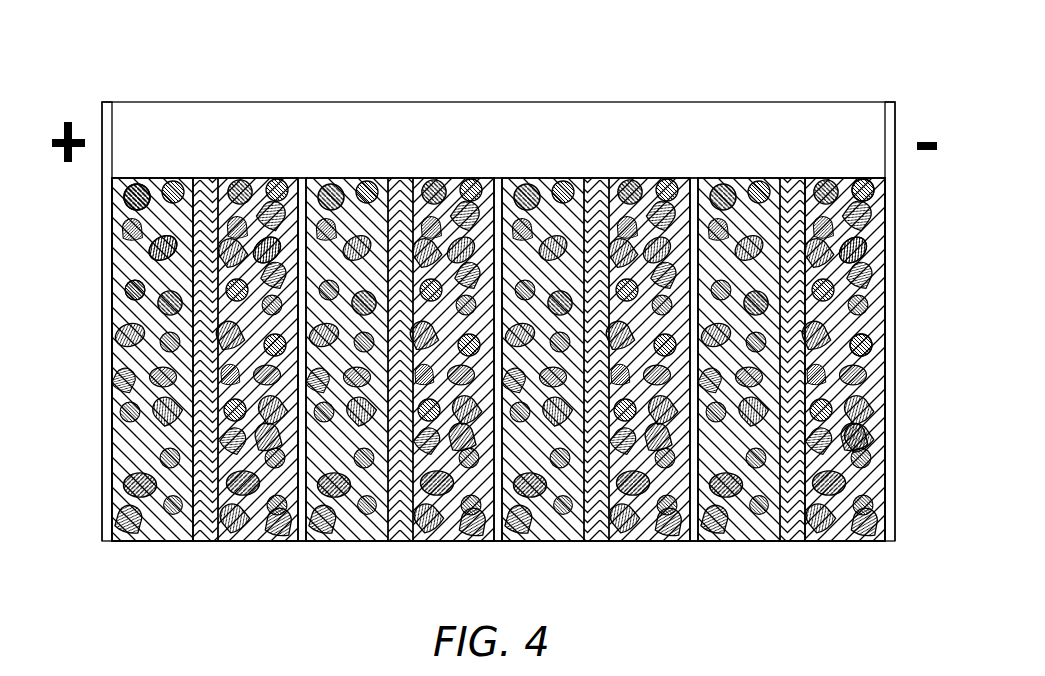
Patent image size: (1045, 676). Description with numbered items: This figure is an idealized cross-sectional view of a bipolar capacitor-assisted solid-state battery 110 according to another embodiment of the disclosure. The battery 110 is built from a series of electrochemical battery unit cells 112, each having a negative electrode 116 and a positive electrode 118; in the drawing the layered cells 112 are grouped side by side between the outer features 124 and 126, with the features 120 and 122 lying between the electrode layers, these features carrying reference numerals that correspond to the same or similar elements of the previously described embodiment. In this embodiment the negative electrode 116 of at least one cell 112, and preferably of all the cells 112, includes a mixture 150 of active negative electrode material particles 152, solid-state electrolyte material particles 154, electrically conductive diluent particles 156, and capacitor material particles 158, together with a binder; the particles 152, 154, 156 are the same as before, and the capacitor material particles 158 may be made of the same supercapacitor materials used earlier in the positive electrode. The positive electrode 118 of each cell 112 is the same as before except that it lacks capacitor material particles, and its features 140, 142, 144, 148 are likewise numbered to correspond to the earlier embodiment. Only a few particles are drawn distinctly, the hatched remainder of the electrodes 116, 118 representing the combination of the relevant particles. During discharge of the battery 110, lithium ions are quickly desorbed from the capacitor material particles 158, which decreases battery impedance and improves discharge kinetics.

The bipolar capacitor-assisted solid-state battery 110 is at (78, 88).
The electrochemical battery unit cell 112 is at (296, 552).
The negative electrode 116 is at (225, 178).
The positive electrode 118 is at (152, 178).
The separator layer 120 is at (204, 178).
The bipolar current collector 122 is at (303, 178).
The positive terminal current collector 124 is at (108, 107).
The negative terminal current collector 126 is at (890, 102).
The anode 140 is at (131, 166).
The anode active material particle 142 is at (128, 200).
The anode conductive particle 144 is at (158, 250).
The anode matrix particle 148 is at (138, 290).
The mixture 150 is at (874, 166).
The active negative electrode material particles 152 is at (872, 337).
The solid-state electrolyte material particles 154 is at (274, 247).
The electrically conductive diluent particles 156 is at (878, 194).
The capacitor material particles 158 is at (870, 441).